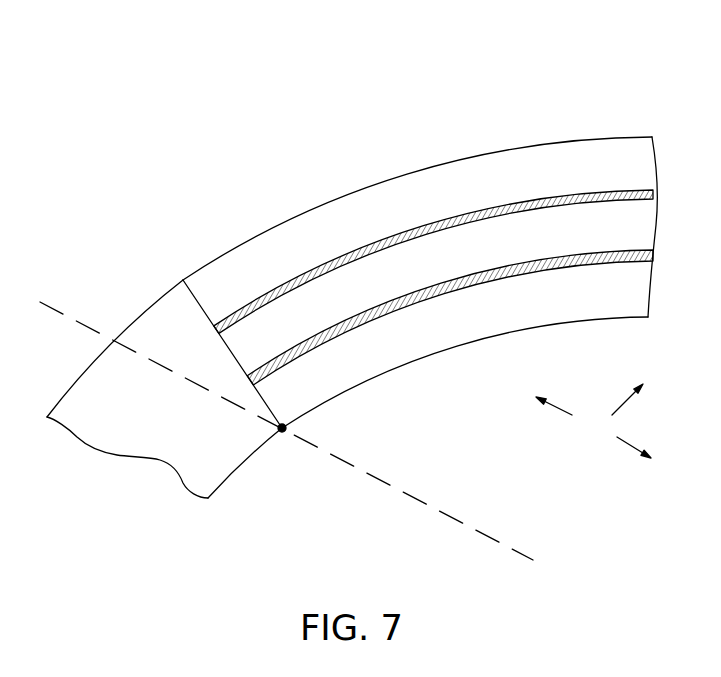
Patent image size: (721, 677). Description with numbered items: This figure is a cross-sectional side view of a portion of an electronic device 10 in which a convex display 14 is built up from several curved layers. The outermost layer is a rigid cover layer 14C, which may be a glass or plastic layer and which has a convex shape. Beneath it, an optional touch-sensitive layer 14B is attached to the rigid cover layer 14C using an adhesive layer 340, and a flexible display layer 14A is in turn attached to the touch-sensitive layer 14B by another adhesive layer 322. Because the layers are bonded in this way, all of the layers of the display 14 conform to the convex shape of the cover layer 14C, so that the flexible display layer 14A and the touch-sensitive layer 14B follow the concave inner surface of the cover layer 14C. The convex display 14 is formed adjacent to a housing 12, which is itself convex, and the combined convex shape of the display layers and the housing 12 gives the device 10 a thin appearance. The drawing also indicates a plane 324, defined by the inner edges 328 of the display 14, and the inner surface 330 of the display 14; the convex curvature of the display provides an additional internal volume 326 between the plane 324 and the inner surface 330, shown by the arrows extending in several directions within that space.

The electronic device 10 is at (193, 42).
The housing 12 is at (165, 315).
The convex display 14 is at (552, 107).
The flexible display layer 14A is at (560, 283).
The touch-sensitive layer 14B is at (443, 257).
The rigid cover layer 14C is at (318, 230).
The adhesive layer 322 is at (503, 272).
The plane 324 is at (292, 432).
The additional internal volume 326 is at (593, 421).
The inner edges 328 is at (287, 440).
The inner surface 330 is at (458, 352).
The adhesive layer 340 is at (384, 240).